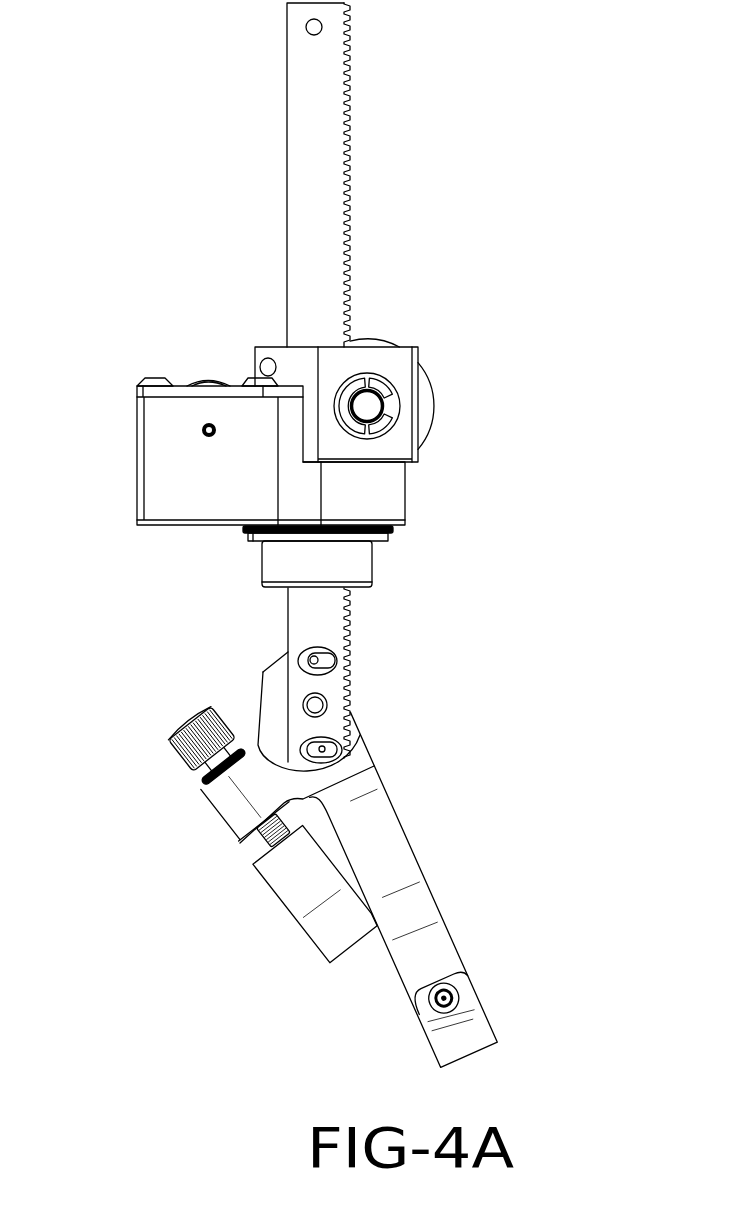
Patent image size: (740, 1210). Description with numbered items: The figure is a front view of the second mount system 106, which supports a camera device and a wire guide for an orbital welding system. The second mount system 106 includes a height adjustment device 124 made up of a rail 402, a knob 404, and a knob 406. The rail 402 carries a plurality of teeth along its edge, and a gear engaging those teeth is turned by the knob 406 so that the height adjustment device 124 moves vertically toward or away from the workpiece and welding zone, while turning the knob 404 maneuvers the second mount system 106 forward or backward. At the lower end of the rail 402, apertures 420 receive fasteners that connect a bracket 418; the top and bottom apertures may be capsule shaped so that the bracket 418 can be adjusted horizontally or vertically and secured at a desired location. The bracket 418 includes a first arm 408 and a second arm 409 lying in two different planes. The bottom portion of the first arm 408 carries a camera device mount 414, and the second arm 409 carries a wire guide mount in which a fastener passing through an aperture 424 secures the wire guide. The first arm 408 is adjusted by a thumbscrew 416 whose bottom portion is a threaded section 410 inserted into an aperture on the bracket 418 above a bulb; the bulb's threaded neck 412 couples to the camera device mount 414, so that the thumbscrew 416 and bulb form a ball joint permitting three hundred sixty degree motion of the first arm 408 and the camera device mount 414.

The second mount system 106 is at (528, 100).
The rail 402 is at (297, 100).
The knob 404 is at (197, 382).
The knob 406 is at (428, 395).
The height adjustment device 124 is at (210, 497).
The bracket 418 is at (362, 733).
The apertures 420 is at (320, 750).
The second arm 409 is at (488, 1062).
The aperture 424 is at (452, 988).
The first arm 408 is at (166, 741).
The thumbscrew 416 is at (205, 710).
The threaded section 410 is at (205, 782).
The threaded neck 412 is at (260, 843).
The camera device mount 414 is at (300, 922).